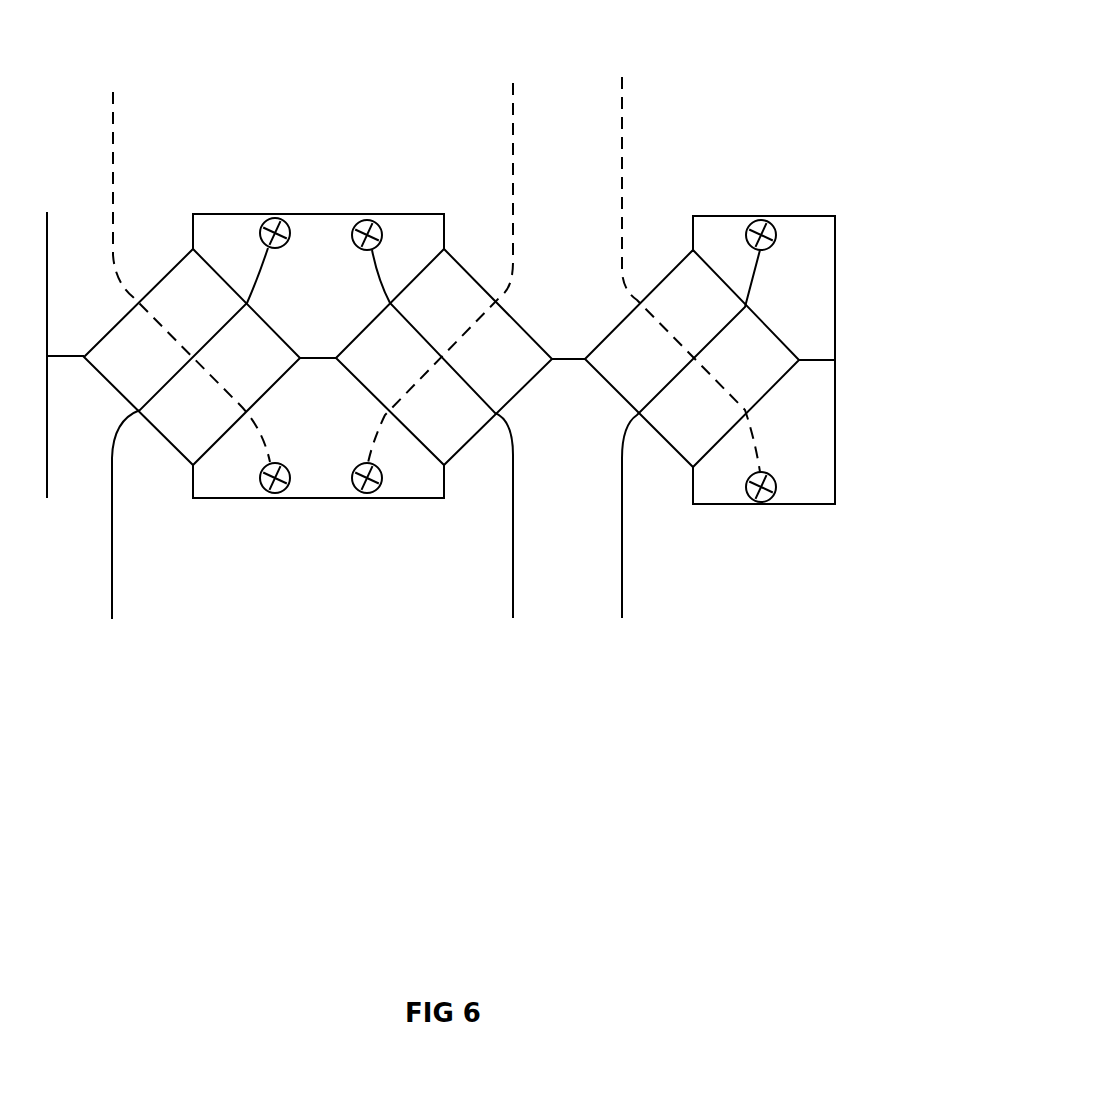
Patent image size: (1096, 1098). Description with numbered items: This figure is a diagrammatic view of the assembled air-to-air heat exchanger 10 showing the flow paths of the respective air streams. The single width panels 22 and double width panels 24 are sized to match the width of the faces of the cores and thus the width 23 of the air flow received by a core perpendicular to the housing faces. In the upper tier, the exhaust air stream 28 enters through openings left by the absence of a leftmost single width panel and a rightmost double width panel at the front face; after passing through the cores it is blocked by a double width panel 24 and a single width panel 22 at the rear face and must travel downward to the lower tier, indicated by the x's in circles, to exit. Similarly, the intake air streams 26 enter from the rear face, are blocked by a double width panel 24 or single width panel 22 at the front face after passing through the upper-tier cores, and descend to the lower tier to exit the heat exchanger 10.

The air-to-air heat exchanger 10 is at (863, 95).
The single width panel 22 is at (780, 216).
The double width panel 24 is at (333, 214).
The intake air streams 26 is at (113, 108).
The exhaust air stream 28 is at (118, 606).
The width of air flow 23 is at (208, 653).